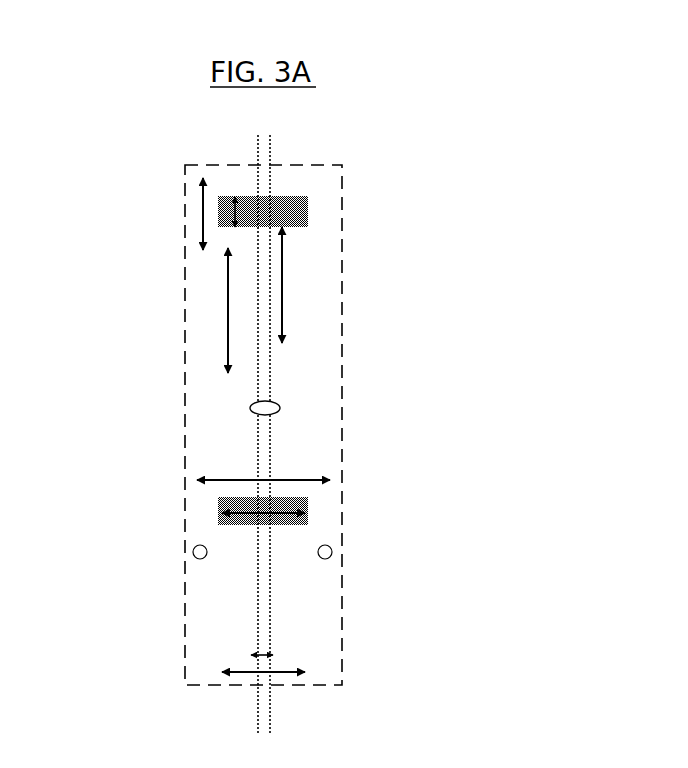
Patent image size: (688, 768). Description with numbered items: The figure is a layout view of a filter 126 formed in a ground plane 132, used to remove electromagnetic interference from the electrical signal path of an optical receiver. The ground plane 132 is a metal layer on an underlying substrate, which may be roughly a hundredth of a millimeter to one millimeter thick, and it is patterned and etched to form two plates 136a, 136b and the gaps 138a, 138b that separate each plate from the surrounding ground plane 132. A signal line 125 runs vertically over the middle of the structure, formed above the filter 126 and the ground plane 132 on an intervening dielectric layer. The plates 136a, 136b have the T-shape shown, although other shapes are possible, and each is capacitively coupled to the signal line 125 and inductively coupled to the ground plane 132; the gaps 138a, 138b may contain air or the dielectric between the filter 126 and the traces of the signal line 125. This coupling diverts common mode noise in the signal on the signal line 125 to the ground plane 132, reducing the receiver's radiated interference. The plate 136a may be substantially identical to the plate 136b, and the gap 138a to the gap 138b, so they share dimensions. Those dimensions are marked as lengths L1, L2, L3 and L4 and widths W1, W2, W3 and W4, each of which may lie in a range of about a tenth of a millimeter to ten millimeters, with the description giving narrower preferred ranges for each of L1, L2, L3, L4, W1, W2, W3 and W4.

The ground plane 132 is at (413, 162).
The filter 126 is at (342, 411).
The signal line 125 is at (250, 408).
The plate 136a is at (293, 205).
The plate 136b is at (300, 500).
The gap 138a is at (293, 355).
The gap 138b is at (292, 595).
The width W1 is at (232, 212).
The width W2 is at (258, 655).
The width W3 is at (236, 480).
The width W4 is at (246, 674).
The length L1 is at (203, 226).
The length L2 is at (228, 308).
The length L3 is at (282, 279).
The length L4 is at (248, 520).